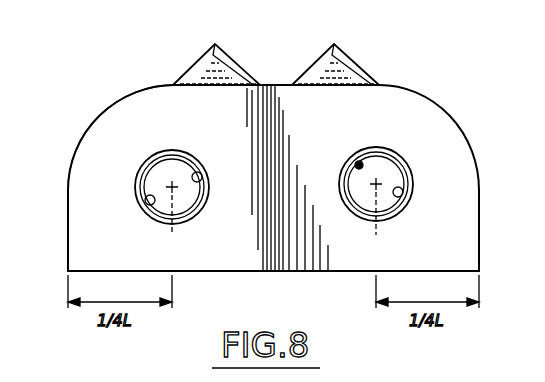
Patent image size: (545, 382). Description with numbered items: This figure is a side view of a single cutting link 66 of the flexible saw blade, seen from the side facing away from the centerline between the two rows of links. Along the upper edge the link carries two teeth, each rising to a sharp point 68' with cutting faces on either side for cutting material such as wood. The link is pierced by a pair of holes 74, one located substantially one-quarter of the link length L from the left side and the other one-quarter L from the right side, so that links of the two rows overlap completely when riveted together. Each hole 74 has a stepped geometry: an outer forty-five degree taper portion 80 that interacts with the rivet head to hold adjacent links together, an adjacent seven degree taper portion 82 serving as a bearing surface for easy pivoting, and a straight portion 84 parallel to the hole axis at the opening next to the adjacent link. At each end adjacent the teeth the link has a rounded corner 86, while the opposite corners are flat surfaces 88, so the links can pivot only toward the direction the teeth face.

The cutting link 66 is at (457, 122).
The point 68' is at (341, 53).
The hole 74 is at (201, 177).
The 45 degree taper portion 80 is at (182, 155).
The 7 degree taper portion 82 is at (157, 153).
The straight portion 84 is at (149, 203).
The rounded corner 86 is at (106, 112).
The flat surface 88 is at (65, 221).